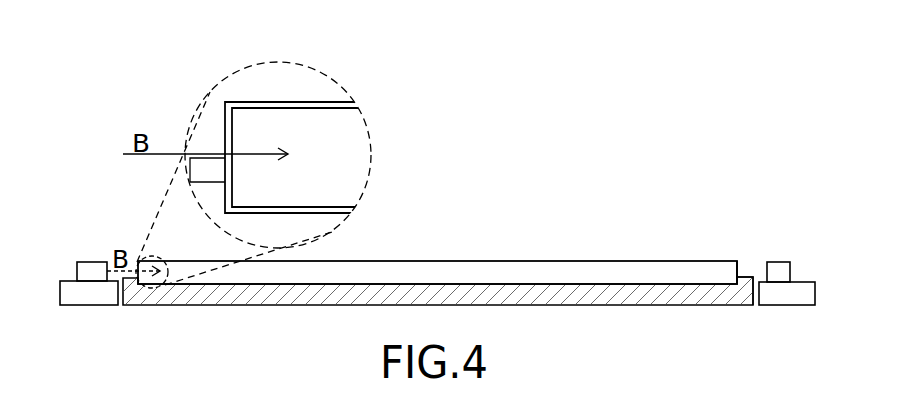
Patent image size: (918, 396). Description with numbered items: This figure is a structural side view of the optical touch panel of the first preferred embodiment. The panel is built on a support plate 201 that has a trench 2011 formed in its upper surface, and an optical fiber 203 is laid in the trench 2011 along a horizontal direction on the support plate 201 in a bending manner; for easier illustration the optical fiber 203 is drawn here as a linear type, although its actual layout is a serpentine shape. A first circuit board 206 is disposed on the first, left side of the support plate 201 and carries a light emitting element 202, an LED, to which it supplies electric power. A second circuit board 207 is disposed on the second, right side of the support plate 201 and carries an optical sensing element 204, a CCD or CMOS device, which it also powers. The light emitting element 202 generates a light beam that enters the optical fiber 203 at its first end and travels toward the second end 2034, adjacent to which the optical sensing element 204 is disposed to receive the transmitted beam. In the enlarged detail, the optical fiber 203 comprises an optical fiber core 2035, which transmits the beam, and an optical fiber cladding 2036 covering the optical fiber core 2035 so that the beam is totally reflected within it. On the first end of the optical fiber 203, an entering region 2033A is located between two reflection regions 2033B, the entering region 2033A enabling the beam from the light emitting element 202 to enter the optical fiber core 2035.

The support plate 201 is at (623, 298).
The trench 2011 is at (747, 287).
The light emitting element 202 is at (90, 270).
The optical fiber 203 is at (533, 272).
The entering region 2033A is at (217, 158).
The reflection regions 2033B is at (225, 108).
The second end of the optical fiber 2034 is at (730, 273).
The optical fiber core 2035 is at (360, 152).
The optical fiber cladding 2036 is at (332, 101).
The optical sensing element 204 is at (780, 272).
The first circuit board 206 is at (88, 297).
The second circuit board 207 is at (782, 297).